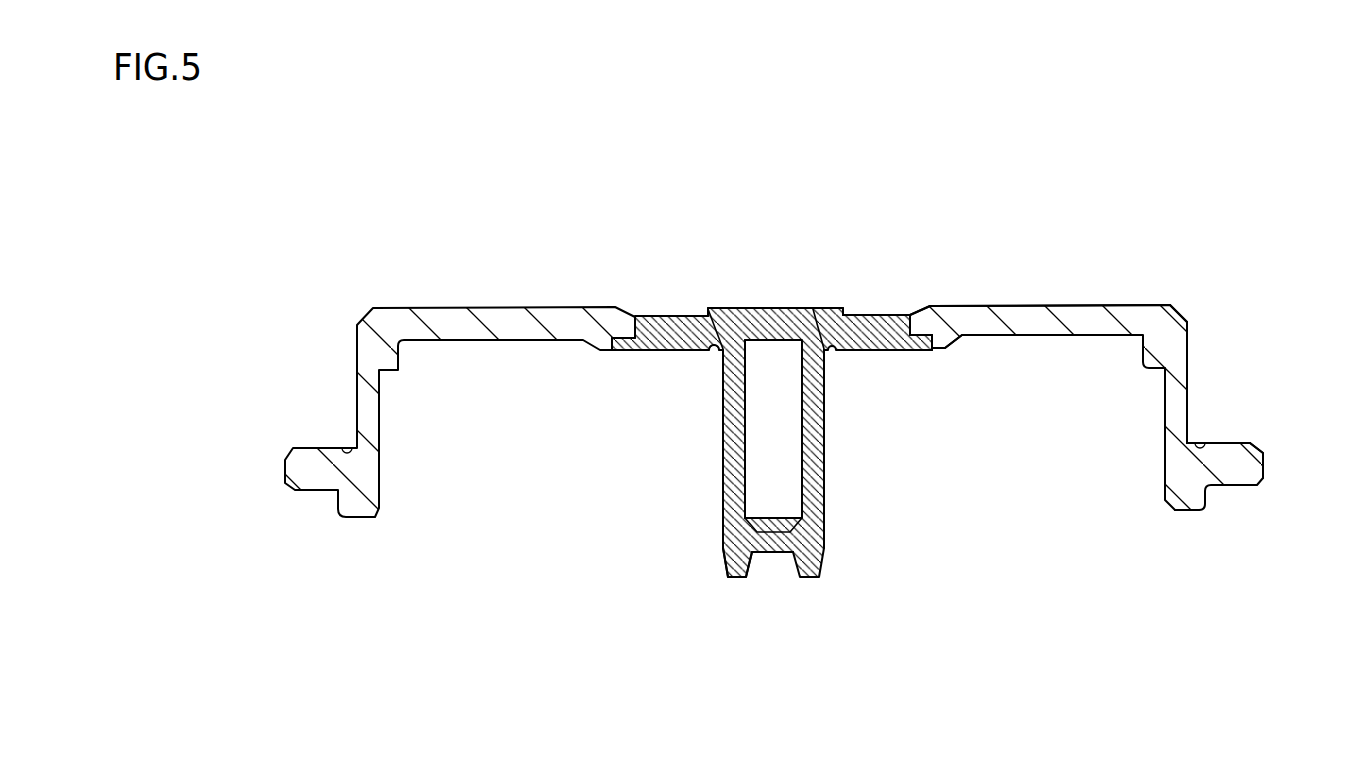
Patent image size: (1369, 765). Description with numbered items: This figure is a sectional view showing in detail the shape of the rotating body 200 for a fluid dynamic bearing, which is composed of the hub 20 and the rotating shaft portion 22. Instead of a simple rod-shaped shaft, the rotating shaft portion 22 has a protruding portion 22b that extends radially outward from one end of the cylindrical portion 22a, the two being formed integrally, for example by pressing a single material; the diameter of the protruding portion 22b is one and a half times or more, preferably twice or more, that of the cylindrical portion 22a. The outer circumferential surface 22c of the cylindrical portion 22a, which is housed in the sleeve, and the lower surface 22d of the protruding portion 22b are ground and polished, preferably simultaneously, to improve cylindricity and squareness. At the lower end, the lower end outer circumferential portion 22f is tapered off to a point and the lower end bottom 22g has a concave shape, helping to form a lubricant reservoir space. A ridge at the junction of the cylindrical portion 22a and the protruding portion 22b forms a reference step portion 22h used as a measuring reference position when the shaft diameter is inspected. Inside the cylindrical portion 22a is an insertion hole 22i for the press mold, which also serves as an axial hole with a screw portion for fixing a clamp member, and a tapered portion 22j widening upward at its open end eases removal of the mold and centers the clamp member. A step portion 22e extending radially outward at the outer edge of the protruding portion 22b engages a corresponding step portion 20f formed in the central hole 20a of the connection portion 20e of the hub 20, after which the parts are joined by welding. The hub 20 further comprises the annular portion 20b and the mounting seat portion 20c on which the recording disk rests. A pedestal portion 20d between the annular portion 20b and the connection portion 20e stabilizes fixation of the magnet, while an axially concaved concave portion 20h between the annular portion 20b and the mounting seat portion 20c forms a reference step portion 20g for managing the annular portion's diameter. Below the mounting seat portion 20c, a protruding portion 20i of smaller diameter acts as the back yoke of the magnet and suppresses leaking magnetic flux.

The rotating body 200 is at (1064, 283).
The hub 20 is at (1030, 305).
The central hole 20a is at (894, 322).
The annular portion 20b is at (1188, 392).
The mounting seat portion 20c is at (1253, 447).
The pedestal portion 20d is at (1180, 309).
The connection portion 20e is at (1092, 305).
The corresponding step portion 20f is at (924, 352).
The reference step portion 20g is at (1198, 441).
The concave portion 20h is at (1205, 441).
The protruding portion 20i is at (1186, 512).
The rotating shaft portion 22 is at (671, 302).
The cylindrical portion 22a is at (723, 463).
The protruding portion 22b is at (875, 320).
The outer circumferential surface 22c is at (826, 457).
The lower surface 22d is at (890, 352).
The step portion 22e is at (927, 333).
The lower end outer circumferential portion 22f is at (723, 565).
The lower end bottom 22g is at (777, 553).
The reference step portion 22h is at (712, 353).
The insertion hole 22i is at (745, 402).
The tapered portion 22j is at (747, 338).